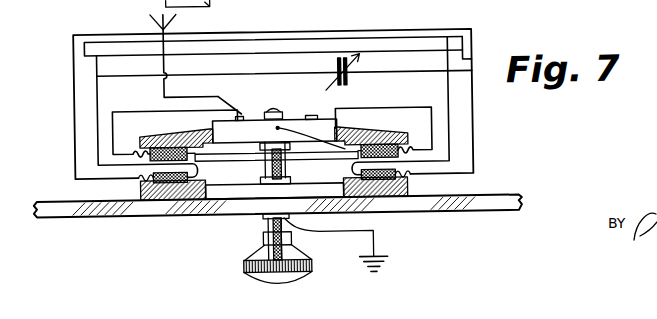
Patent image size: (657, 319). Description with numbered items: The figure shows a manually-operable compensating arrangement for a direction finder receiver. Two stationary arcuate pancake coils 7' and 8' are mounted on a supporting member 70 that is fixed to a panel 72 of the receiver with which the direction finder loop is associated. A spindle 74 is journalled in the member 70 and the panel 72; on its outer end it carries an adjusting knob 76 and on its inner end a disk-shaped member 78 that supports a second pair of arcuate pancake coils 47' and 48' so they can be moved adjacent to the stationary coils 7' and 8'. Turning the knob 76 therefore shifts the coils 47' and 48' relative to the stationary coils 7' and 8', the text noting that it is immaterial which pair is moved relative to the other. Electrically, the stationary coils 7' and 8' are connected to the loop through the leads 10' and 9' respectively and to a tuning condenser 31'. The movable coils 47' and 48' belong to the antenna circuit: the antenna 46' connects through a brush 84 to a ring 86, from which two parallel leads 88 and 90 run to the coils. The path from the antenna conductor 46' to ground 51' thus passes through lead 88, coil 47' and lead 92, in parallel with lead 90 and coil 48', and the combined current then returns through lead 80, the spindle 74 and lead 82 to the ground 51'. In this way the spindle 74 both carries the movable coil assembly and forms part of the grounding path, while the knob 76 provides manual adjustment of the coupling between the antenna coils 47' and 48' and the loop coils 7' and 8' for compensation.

The coil 7' is at (173, 205).
The coil 8' is at (380, 201).
The lead 9' is at (413, 94).
The lead 10' is at (279, 94).
The tuning condenser 31' is at (349, 74).
The antenna 46' is at (190, 56).
The coil 47' is at (166, 142).
The coil 48' is at (379, 137).
The ground 51' is at (385, 267).
The supporting member 70 is at (233, 195).
The panel 72 is at (68, 204).
The spindle 74 is at (280, 112).
The adjusting knob 76 is at (242, 273).
The disk-shaped member 78 is at (258, 120).
The lead 80 is at (310, 136).
The lead 82 is at (318, 233).
The brush 84 is at (232, 103).
The ring 86 is at (312, 116).
The lead 88 is at (175, 126).
The lead 90 is at (383, 123).
The lead 92 is at (212, 160).